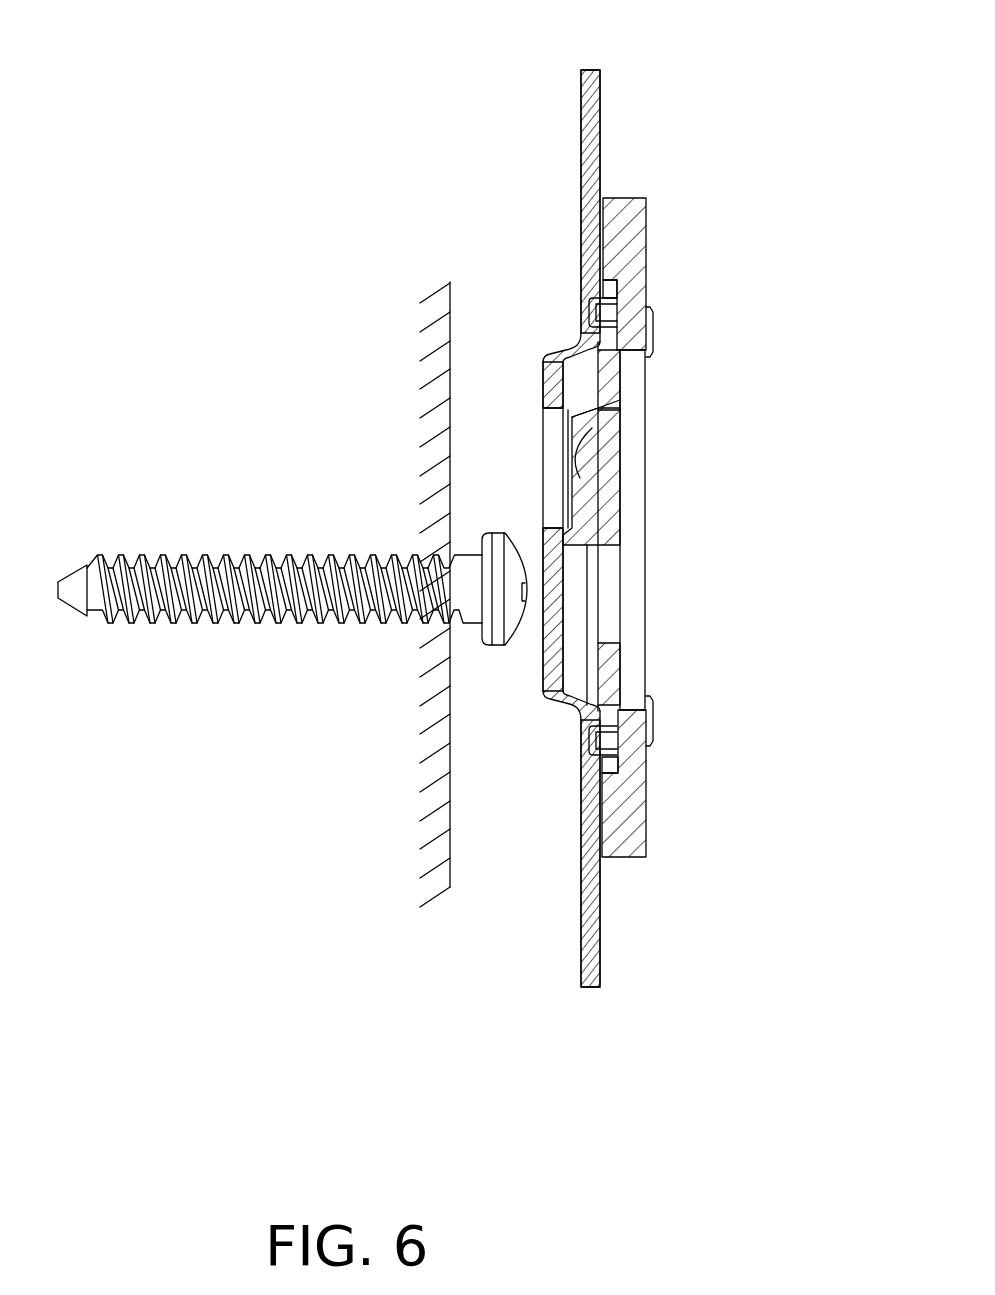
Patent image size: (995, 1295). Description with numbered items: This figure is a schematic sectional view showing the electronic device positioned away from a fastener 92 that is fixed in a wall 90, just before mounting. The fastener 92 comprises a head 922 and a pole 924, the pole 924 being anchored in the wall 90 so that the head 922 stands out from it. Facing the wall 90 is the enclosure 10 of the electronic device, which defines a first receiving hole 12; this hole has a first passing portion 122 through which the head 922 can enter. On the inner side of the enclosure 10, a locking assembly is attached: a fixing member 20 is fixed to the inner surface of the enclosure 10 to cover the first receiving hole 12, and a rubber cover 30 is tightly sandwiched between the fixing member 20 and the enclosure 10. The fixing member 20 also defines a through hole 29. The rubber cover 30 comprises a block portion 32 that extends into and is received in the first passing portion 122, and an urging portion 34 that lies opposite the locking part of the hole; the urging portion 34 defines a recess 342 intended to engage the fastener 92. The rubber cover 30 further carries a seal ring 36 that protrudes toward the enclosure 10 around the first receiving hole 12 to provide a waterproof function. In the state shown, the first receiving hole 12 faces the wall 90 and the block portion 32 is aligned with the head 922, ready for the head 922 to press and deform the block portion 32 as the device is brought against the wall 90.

The enclosure 10 is at (595, 493).
The first receiving hole 12 is at (531, 548).
The first passing portion 122 is at (543, 658).
The fixing member 20 is at (643, 198).
The through hole 29 is at (628, 568).
The rubber cover 30 is at (652, 552).
The block portion 32 is at (553, 590).
The urging portion 34 is at (656, 456).
The recess 342 is at (613, 413).
The seal ring 36 is at (600, 717).
The wall 90 is at (450, 363).
The fastener 92 is at (292, 520).
The head 922 is at (497, 552).
The pole 924 is at (468, 565).